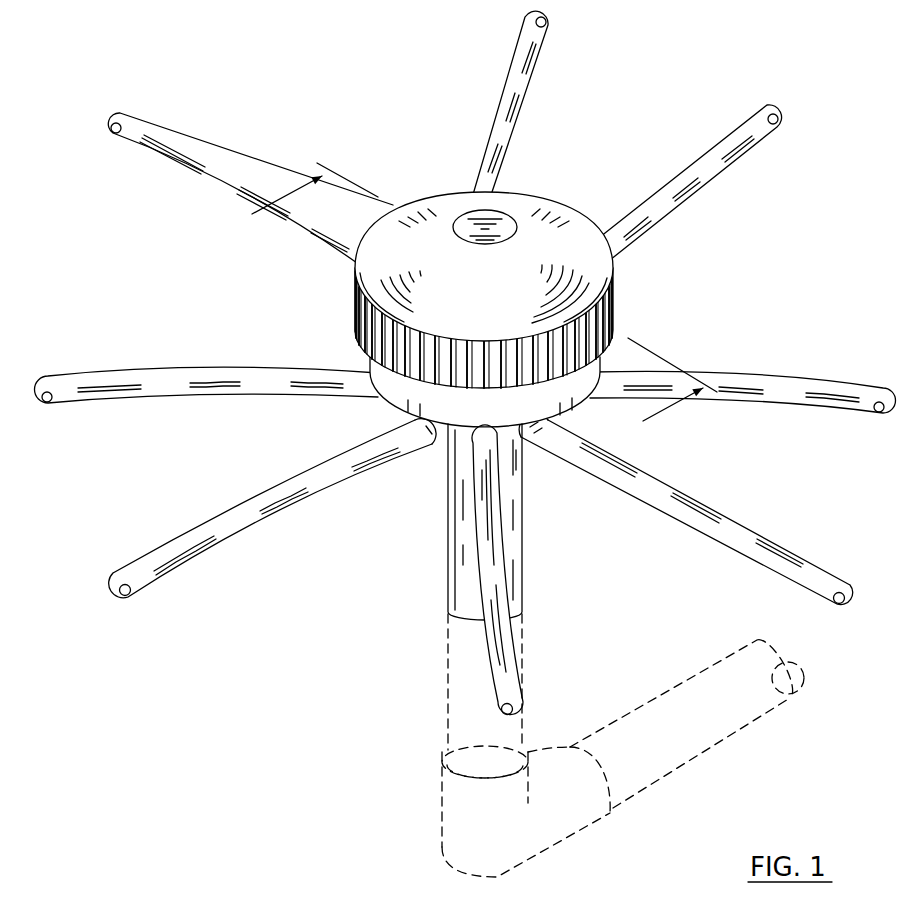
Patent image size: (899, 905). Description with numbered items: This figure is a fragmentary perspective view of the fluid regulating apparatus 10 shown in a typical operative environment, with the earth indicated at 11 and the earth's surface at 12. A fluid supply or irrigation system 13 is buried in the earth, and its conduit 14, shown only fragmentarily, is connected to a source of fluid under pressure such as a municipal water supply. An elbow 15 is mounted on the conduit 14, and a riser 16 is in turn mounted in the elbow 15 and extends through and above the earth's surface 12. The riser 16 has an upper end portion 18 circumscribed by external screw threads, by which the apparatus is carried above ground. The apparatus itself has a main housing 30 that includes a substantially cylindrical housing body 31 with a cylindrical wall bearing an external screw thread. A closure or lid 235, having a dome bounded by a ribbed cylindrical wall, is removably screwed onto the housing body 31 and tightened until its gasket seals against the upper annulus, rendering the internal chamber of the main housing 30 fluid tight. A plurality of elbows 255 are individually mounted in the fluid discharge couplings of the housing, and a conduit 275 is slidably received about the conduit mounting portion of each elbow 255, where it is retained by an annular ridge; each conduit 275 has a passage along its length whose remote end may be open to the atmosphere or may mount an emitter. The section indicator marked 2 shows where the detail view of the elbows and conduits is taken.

The fluid regulating apparatus 10 is at (465, 362).
The earth 11 is at (549, 729).
The earth's surface 12 is at (522, 597).
The fluid supply system or irrigation system 13 is at (412, 767).
The conduit 14 is at (700, 757).
The elbow 15 is at (443, 847).
The riser 16 is at (447, 676).
The upper end portion 18 is at (456, 450).
The main housing 30 is at (621, 290).
The housing body 31 is at (392, 400).
The closure or lid 235 is at (545, 204).
The elbows 255 is at (422, 427).
The conduit 275 is at (150, 563).
The section line of FIG. 2 is at (474, 303).